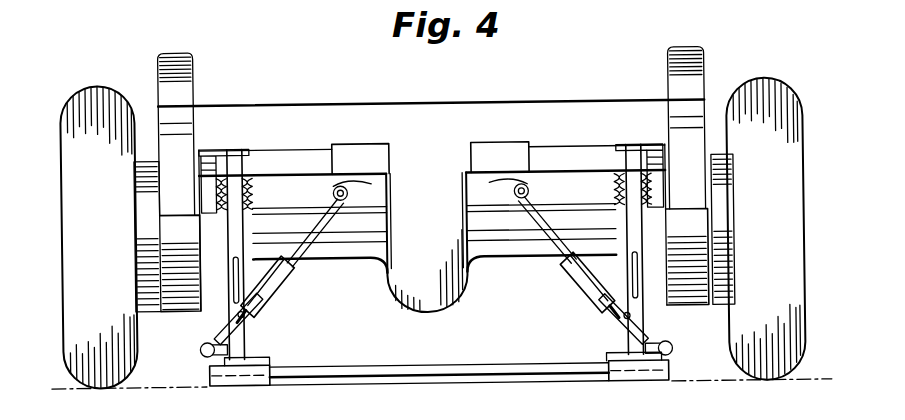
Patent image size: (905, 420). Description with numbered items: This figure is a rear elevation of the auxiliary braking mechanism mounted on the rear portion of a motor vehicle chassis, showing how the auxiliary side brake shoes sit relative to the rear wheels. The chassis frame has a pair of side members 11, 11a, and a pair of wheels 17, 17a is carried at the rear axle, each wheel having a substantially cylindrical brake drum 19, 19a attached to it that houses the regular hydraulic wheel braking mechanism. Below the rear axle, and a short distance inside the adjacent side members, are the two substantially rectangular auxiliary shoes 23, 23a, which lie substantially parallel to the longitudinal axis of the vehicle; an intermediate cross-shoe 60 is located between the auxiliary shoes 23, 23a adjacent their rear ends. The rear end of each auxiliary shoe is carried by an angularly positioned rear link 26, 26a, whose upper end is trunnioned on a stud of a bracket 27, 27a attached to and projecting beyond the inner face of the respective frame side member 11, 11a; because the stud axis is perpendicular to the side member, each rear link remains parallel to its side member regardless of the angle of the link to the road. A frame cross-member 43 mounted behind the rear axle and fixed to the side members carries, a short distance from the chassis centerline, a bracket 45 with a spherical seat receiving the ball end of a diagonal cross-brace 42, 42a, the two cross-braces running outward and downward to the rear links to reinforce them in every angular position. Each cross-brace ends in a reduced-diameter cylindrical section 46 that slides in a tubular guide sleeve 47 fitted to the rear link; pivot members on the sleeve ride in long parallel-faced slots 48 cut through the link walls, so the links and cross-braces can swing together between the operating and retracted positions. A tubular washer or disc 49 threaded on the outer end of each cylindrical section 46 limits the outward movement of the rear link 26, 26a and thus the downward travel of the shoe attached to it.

The frame side member 11 is at (690, 50).
The frame side member 11a is at (192, 62).
The wheel 17 is at (772, 82).
The wheel 17a is at (99, 86).
The brake drum 19 is at (734, 282).
The brake drum 19a is at (147, 308).
The auxiliary shoe 23 is at (626, 384).
The auxiliary shoe 23a is at (256, 384).
The rear link 26 is at (616, 166).
The rear link 26a is at (250, 176).
The bracket 27 is at (212, 147).
The bracket 27a is at (633, 147).
The cross-brace 42 is at (560, 262).
The cross-brace 42a is at (308, 268).
The frame cross-member 43 is at (466, 103).
The bracket 45 is at (364, 143).
The cylindrical section 46 is at (281, 286).
The tubular guide sleeve 47 is at (262, 316).
The slot 48 is at (230, 268).
The washer 49 is at (200, 352).
The cross-shoe 60 is at (400, 383).